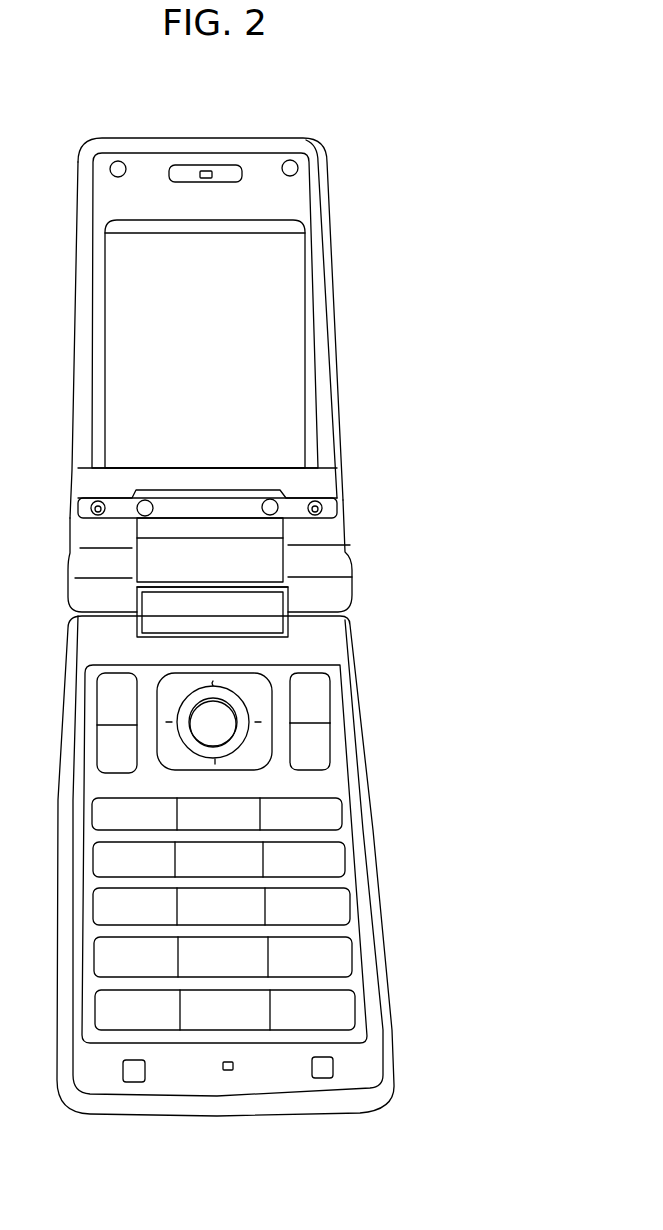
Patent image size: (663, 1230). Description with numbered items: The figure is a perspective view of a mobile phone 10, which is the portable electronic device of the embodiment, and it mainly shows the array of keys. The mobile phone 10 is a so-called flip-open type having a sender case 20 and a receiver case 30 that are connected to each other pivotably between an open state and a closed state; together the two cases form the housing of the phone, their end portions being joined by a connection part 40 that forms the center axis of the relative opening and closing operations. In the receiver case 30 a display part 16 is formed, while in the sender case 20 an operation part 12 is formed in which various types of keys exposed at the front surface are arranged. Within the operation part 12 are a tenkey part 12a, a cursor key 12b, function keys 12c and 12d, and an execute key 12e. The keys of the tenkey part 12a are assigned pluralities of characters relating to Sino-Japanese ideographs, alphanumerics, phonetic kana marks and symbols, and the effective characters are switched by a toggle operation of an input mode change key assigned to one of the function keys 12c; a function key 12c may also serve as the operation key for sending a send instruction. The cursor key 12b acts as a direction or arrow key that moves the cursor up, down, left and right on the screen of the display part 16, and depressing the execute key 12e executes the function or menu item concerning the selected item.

The mobile phone 10 is at (236, 1204).
The operation part 12 is at (308, 830).
The tenkey part 12a is at (342, 1005).
The cursor key 12b is at (307, 693).
The function key 12c is at (317, 680).
The function key 12d is at (317, 737).
The execute key 12e is at (215, 713).
The display part 16 is at (292, 288).
The sender case 20 is at (362, 790).
The receiver case 30 is at (244, 328).
The connection part 40 is at (368, 585).